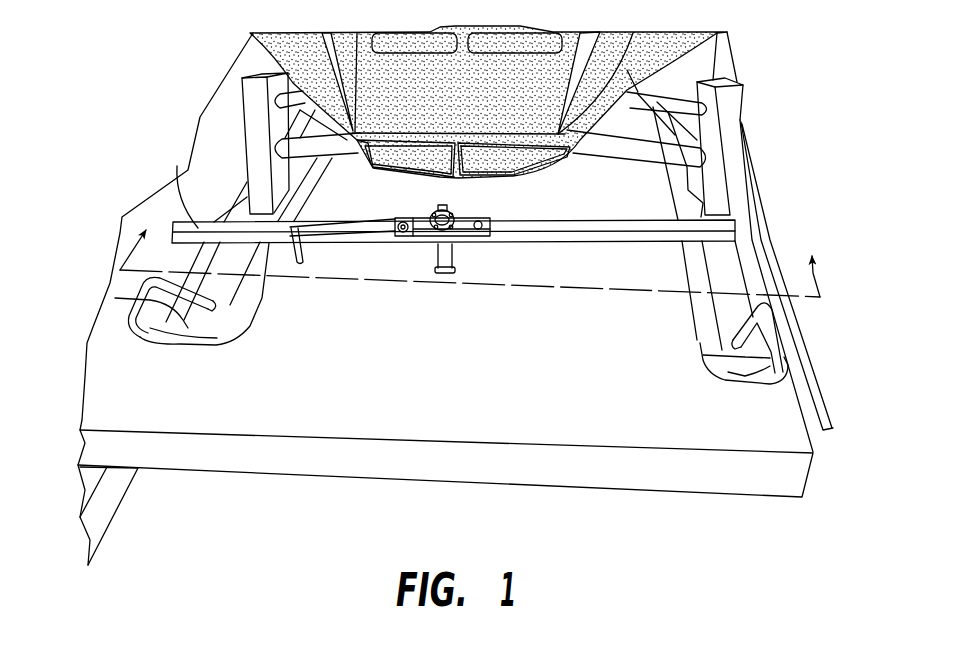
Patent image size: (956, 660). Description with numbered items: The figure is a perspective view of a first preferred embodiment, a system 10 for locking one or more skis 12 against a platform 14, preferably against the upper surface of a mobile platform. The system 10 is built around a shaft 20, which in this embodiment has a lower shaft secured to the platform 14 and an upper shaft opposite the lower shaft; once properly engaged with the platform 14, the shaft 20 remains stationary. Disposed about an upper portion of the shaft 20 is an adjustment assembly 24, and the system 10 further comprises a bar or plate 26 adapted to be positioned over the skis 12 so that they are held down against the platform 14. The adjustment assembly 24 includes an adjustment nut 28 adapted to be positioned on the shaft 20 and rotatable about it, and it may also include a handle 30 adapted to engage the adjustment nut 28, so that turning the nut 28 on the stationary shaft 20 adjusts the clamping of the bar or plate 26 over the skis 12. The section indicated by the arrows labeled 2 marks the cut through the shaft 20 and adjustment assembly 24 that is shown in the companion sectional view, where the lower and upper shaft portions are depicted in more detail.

The system 10 is at (754, 101).
The skis 12 is at (115, 298).
The platform 14 is at (470, 361).
The shaft 20 is at (441, 249).
The adjustment assembly 24 is at (469, 207).
The bar or plate 26 is at (177, 178).
The adjustment nut 28 is at (431, 207).
The handle 30 is at (302, 266).
The section line 2- 2 is at (470, 250).